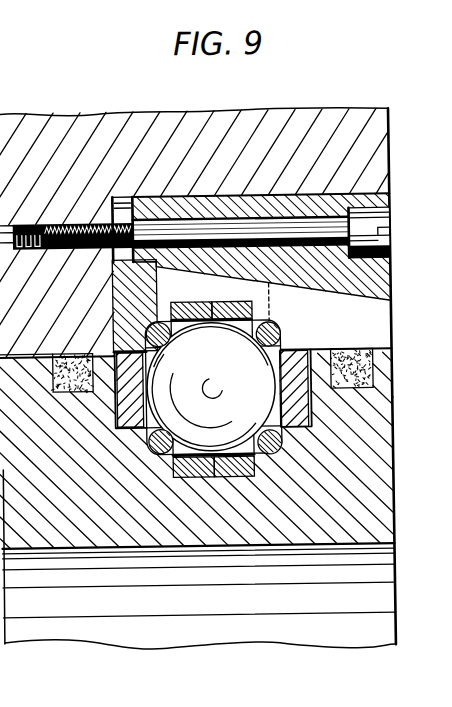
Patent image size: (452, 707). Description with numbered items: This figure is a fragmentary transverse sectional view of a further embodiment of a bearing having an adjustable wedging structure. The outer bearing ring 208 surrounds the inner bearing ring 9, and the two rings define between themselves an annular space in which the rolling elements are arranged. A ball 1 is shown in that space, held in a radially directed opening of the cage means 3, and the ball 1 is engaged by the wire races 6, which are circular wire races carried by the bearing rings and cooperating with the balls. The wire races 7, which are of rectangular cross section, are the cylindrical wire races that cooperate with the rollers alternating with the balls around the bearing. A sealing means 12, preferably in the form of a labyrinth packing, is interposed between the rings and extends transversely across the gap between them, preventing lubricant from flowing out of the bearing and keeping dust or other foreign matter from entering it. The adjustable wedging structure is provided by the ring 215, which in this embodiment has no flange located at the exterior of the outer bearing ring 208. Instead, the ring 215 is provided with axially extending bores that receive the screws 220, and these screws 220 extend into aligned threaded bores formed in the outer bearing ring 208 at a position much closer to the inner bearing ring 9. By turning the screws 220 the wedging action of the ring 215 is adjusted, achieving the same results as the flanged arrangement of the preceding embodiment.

The outer bearing ring 208 is at (335, 124).
The screws 220 is at (380, 223).
The ring 215 is at (375, 286).
The sealing means 12 is at (50, 380).
The cage means 3 is at (115, 402).
The balls 1 is at (172, 417).
The wire races for the balls 6 is at (160, 454).
The wire races for the rollers 7 is at (196, 478).
The inner bearing ring 9 is at (370, 500).